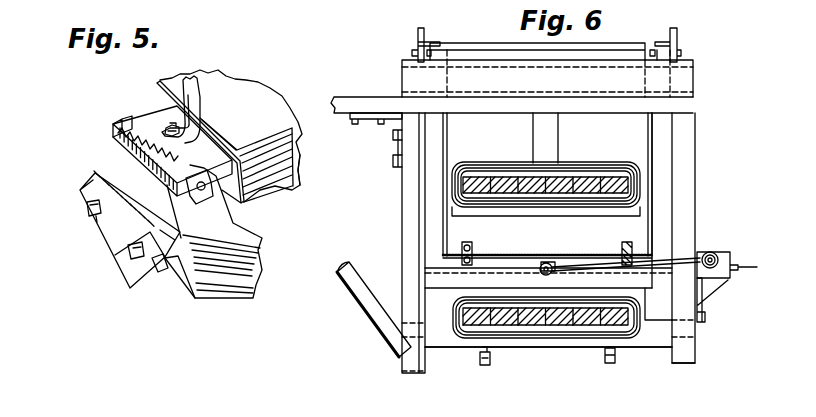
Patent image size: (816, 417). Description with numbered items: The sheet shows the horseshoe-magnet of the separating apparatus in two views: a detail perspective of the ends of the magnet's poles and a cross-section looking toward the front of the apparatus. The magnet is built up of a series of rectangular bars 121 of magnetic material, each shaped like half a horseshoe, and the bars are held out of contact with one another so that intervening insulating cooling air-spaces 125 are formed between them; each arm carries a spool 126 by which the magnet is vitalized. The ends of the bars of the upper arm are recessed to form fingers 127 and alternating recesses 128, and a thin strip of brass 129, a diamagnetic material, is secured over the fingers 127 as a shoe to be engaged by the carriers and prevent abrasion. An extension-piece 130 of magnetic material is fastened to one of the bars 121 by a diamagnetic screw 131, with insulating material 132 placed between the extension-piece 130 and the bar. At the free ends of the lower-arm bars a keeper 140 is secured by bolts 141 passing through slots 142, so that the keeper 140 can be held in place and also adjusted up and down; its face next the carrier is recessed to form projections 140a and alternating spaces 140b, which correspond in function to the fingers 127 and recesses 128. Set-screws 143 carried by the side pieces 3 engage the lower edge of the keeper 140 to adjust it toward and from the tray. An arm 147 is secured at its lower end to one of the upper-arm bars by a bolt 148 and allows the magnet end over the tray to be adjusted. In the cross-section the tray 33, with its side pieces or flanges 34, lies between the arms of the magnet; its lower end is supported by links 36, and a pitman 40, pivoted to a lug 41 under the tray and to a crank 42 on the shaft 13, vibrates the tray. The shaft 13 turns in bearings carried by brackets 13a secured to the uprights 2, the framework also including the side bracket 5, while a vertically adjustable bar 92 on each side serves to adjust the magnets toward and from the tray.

In FIG. 6, the uprights 2 is at (692, 347).
In FIG. 6, the side pieces 3 is at (458, 345).
In FIG. 6, the side bracket 5 is at (373, 310).
In FIG. 6, the shaft 13 is at (735, 265).
In FIG. 6, the brackets 13a is at (716, 285).
In FIG. 6, the tray 33 is at (581, 255).
In FIG. 6, the side pieces or flanges 34 is at (650, 143).
In FIG. 6, the links 36 is at (703, 195).
In FIG. 6, the pitman 40 is at (660, 258).
In FIG. 6, the lug 41 is at (540, 262).
In FIG. 6, the crank 42 is at (718, 252).
In FIG. 6, the bar 92 is at (432, 42).
In FIG. 5, the bars 121 is at (225, 157).
In FIG. 6, the bars 121 is at (563, 328).
In FIG. 5, the insulating cooling air-spaces 125 is at (150, 120).
In FIG. 6, the insulating cooling air-spaces 125 is at (523, 327).
In FIG. 5, the spool 126 is at (228, 107).
In FIG. 5, the fingers 127 is at (118, 122).
In FIG. 5, the recesses 128 is at (113, 150).
In FIG. 5, the strip of brass 129 is at (108, 137).
In FIG. 5, the extension-piece 130 is at (208, 200).
In FIG. 5, the screw 131 is at (306, 192).
In FIG. 5, the insulating material 132 is at (213, 150).
In FIG. 5, the keeper 140 is at (115, 258).
In FIG. 5, the projections 140a is at (95, 174).
In FIG. 5, the spaces 140b is at (120, 248).
In FIG. 5, the bolts 141 is at (86, 212).
In FIG. 5, the slots 142 is at (163, 270).
In FIG. 6, the set-screws 143 is at (485, 366).
In FIG. 5, the arm 147 is at (195, 85).
In FIG. 6, the arm 147 is at (574, 138).
In FIG. 5, the bolt 148 is at (170, 122).